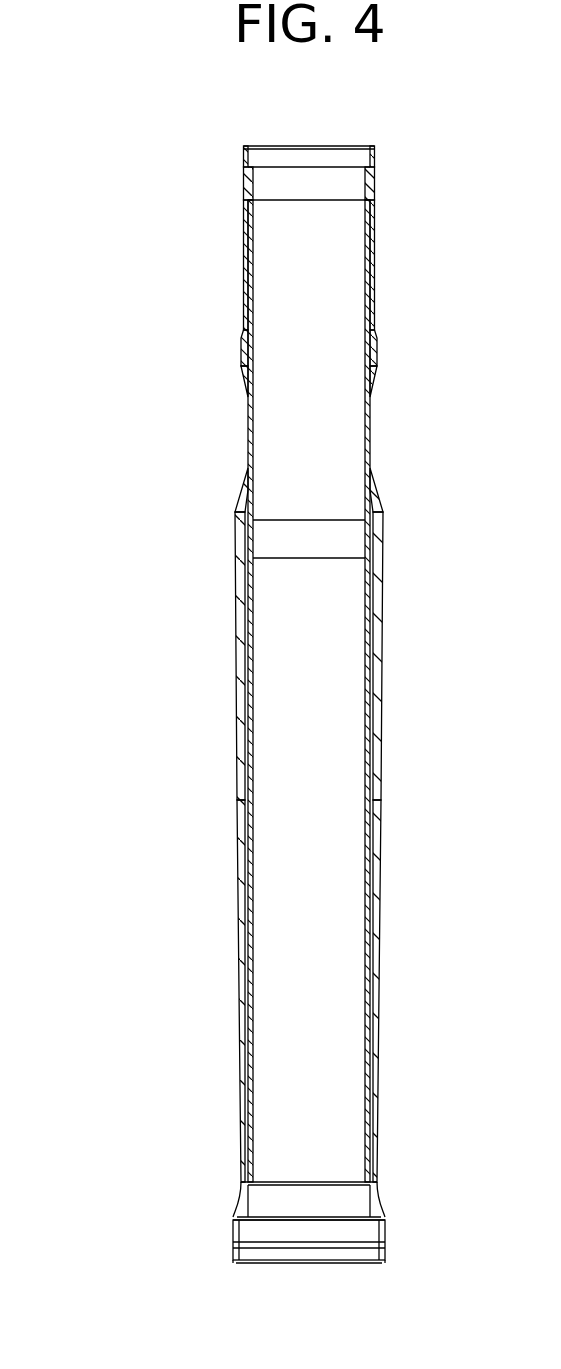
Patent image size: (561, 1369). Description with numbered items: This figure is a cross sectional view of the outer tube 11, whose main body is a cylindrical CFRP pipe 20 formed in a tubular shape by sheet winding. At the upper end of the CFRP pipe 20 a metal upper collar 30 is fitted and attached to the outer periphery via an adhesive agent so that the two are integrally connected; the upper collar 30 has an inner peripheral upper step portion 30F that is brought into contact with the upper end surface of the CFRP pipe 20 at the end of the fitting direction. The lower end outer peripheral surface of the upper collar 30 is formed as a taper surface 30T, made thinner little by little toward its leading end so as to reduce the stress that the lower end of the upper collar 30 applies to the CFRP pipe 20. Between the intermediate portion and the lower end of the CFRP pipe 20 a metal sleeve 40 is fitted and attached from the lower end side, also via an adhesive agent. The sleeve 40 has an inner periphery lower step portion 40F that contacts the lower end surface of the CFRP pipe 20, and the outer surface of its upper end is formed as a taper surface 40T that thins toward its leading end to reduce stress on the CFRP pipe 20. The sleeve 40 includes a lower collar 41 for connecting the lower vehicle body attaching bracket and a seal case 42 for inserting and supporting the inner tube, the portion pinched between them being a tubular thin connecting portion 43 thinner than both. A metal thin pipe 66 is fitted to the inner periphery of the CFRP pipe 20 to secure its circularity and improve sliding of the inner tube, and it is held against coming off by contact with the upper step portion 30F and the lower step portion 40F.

The outer tube 11 is at (130, 286).
The upper collar 30 is at (243, 185).
The inner peripheral upper step portion 30F is at (252, 201).
The metal thin pipe 66 is at (251, 338).
The taper surface 30T is at (243, 375).
The CFRP pipe 20 is at (249, 450).
The taper surface 40T is at (238, 494).
The metal sleeve 40 is at (236, 618).
The lower collar 41 is at (236, 670).
The tubular thin connecting portion 43 is at (241, 1068).
The inner periphery lower step portion 40F is at (248, 1178).
The seal case 42 is at (232, 1226).